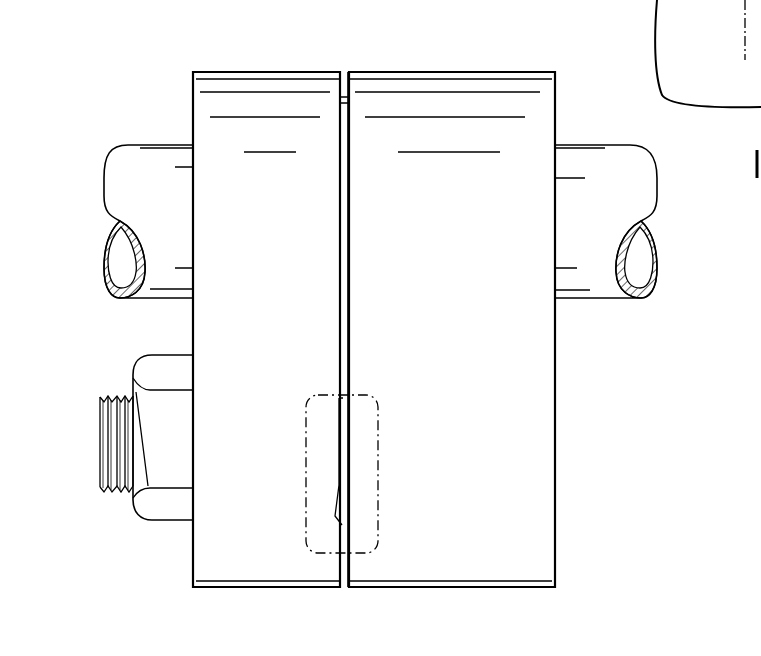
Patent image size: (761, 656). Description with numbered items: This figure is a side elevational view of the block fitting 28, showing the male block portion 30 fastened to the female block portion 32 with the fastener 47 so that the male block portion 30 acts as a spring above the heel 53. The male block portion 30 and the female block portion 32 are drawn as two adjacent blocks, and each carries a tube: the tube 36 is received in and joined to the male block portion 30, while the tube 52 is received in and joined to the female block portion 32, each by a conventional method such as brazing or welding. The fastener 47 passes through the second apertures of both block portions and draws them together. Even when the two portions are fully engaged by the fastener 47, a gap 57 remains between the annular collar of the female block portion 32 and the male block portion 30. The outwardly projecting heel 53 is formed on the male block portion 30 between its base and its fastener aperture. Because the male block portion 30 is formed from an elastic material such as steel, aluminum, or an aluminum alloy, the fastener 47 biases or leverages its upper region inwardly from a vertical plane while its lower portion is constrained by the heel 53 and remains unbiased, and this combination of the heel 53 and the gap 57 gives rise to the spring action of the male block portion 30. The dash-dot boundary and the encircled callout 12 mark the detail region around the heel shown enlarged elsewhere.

The latch detail region 12 is at (378, 420).
The block fitting 28 is at (444, 64).
The male block portion 30 is at (192, 105).
The female block portion 32 is at (557, 105).
The tube 36 is at (142, 144).
The fastener 47 is at (115, 397).
The tube 52 is at (590, 301).
The heel 53 is at (346, 572).
The gap 57 is at (344, 72).